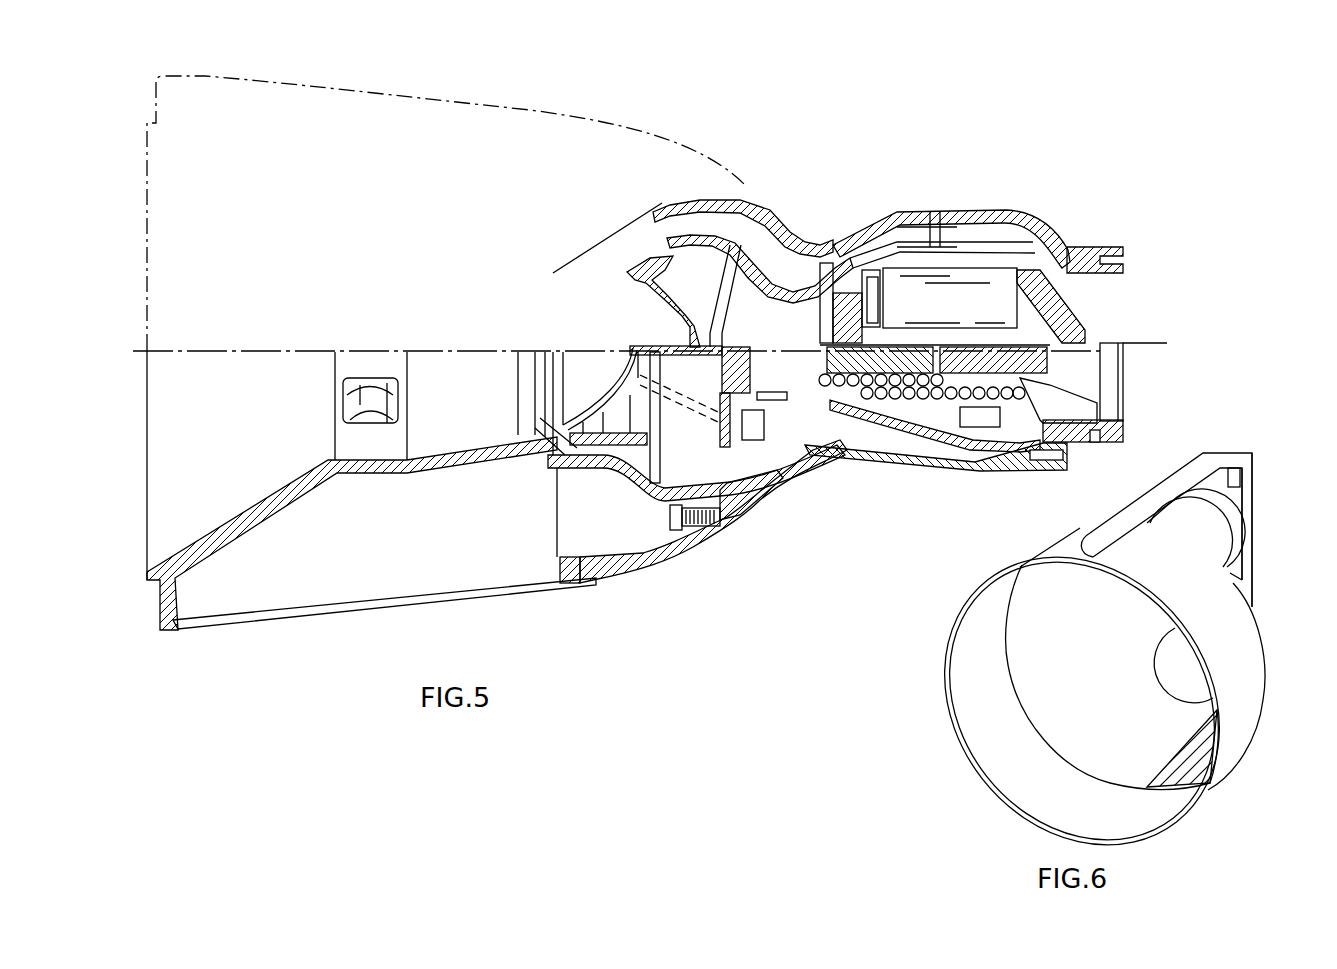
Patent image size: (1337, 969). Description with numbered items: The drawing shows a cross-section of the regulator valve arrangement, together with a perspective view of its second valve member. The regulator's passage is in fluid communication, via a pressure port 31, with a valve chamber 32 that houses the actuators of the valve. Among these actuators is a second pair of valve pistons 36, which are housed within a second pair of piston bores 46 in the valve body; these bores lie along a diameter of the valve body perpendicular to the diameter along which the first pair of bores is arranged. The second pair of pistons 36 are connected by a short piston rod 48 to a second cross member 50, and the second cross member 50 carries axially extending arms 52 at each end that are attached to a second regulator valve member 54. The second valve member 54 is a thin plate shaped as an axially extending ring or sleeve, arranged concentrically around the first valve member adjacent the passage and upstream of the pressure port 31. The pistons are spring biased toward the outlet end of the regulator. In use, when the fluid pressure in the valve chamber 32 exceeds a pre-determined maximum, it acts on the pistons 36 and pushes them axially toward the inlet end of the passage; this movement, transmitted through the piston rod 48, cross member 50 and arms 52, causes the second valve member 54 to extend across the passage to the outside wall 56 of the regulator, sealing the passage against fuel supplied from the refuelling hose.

In FIG. 5, the pressure port 31 is at (655, 247).
In FIG. 5, the valve chamber 32 is at (753, 297).
In FIG. 5, the second pair of valve pistons 36 is at (866, 274).
In FIG. 6, the second pair of valve pistons 36 is at (1177, 670).
In FIG. 5, the second pair of piston bores 46 is at (995, 303).
In FIG. 5, the outside wall 56 is at (1053, 235).
In FIG. 6, the axially extending arms 52 is at (1157, 487).
In FIG. 6, the short piston rod 48 is at (1233, 493).
In FIG. 6, the second cross member 50 is at (1250, 578).
In FIG. 6, the second regulator valve member 54 is at (987, 773).